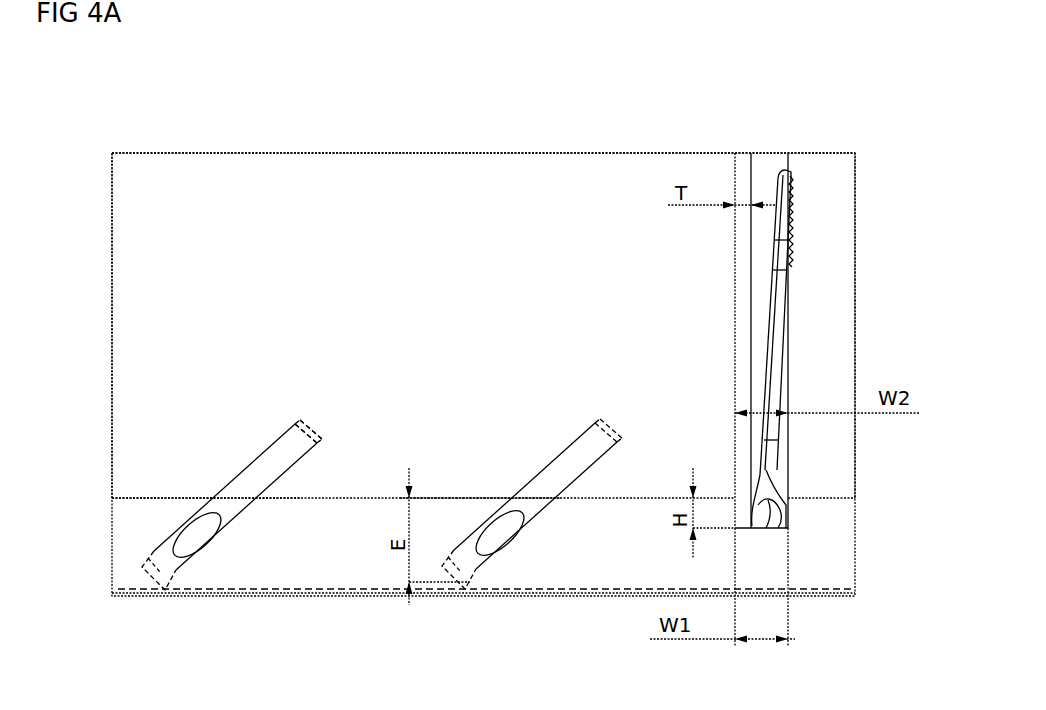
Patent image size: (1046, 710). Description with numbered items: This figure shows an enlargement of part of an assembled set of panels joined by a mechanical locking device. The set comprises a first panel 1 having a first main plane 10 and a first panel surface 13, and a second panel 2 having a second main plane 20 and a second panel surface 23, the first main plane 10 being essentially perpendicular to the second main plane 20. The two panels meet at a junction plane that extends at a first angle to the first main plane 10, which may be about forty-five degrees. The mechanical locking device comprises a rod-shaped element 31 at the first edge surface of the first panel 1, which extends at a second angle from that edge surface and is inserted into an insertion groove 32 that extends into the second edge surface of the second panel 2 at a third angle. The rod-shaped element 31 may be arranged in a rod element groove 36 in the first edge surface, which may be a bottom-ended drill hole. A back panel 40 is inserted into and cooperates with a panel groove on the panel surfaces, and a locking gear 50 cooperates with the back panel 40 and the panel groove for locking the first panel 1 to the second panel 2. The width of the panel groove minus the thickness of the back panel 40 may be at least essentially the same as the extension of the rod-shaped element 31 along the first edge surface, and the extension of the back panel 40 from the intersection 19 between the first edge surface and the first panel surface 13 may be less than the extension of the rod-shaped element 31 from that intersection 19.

The first panel 1 is at (292, 143).
The second panel 2 is at (108, 560).
The first main plane 10 is at (408, 192).
The first panel surface 13 is at (566, 193).
The intersection 19 is at (476, 498).
The second main plane 20 is at (183, 498).
The second panel surface 23 is at (148, 498).
The rod-shaped element 31 is at (165, 565).
The insertion groove 32 is at (157, 592).
The rod element groove 36 is at (295, 423).
The back panel 40 is at (745, 172).
The locking gear 50 is at (780, 175).